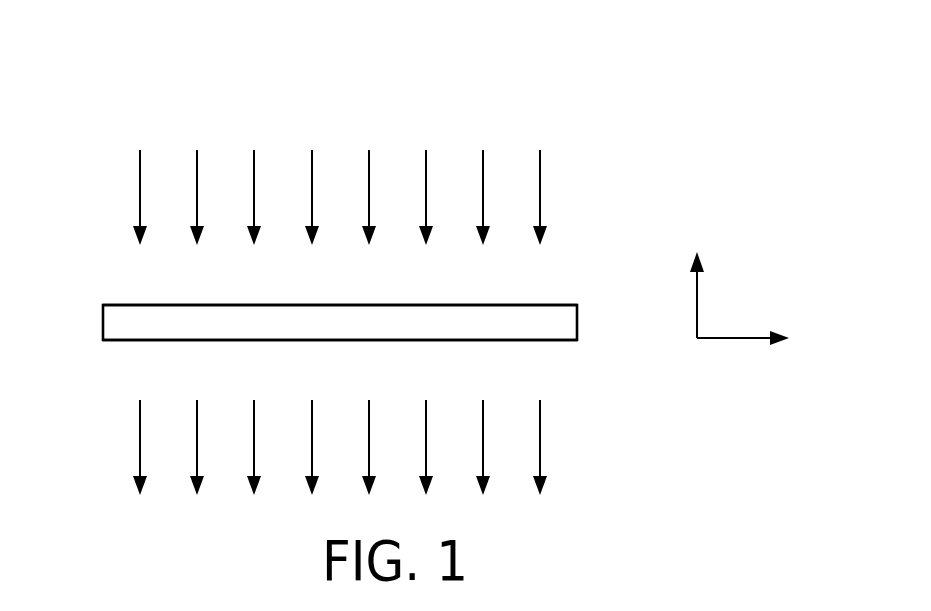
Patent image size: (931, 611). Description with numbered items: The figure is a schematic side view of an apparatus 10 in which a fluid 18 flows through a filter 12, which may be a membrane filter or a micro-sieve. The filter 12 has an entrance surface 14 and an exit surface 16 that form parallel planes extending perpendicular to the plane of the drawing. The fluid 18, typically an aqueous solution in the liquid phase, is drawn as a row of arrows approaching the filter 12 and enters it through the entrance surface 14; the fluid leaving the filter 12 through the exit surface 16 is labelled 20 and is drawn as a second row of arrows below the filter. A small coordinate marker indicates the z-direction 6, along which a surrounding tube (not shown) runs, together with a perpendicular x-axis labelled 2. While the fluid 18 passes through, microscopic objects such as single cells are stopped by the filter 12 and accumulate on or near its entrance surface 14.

The apparatus 10 is at (120, 86).
The filter 12 is at (103, 322).
The entrance surface 14 is at (118, 305).
The exit surface 16 is at (118, 340).
The fluid 18 is at (140, 190).
The fluid leaving the filter 20 is at (540, 440).
The x-axis direction 2 is at (735, 340).
The z-direction 6 is at (697, 300).